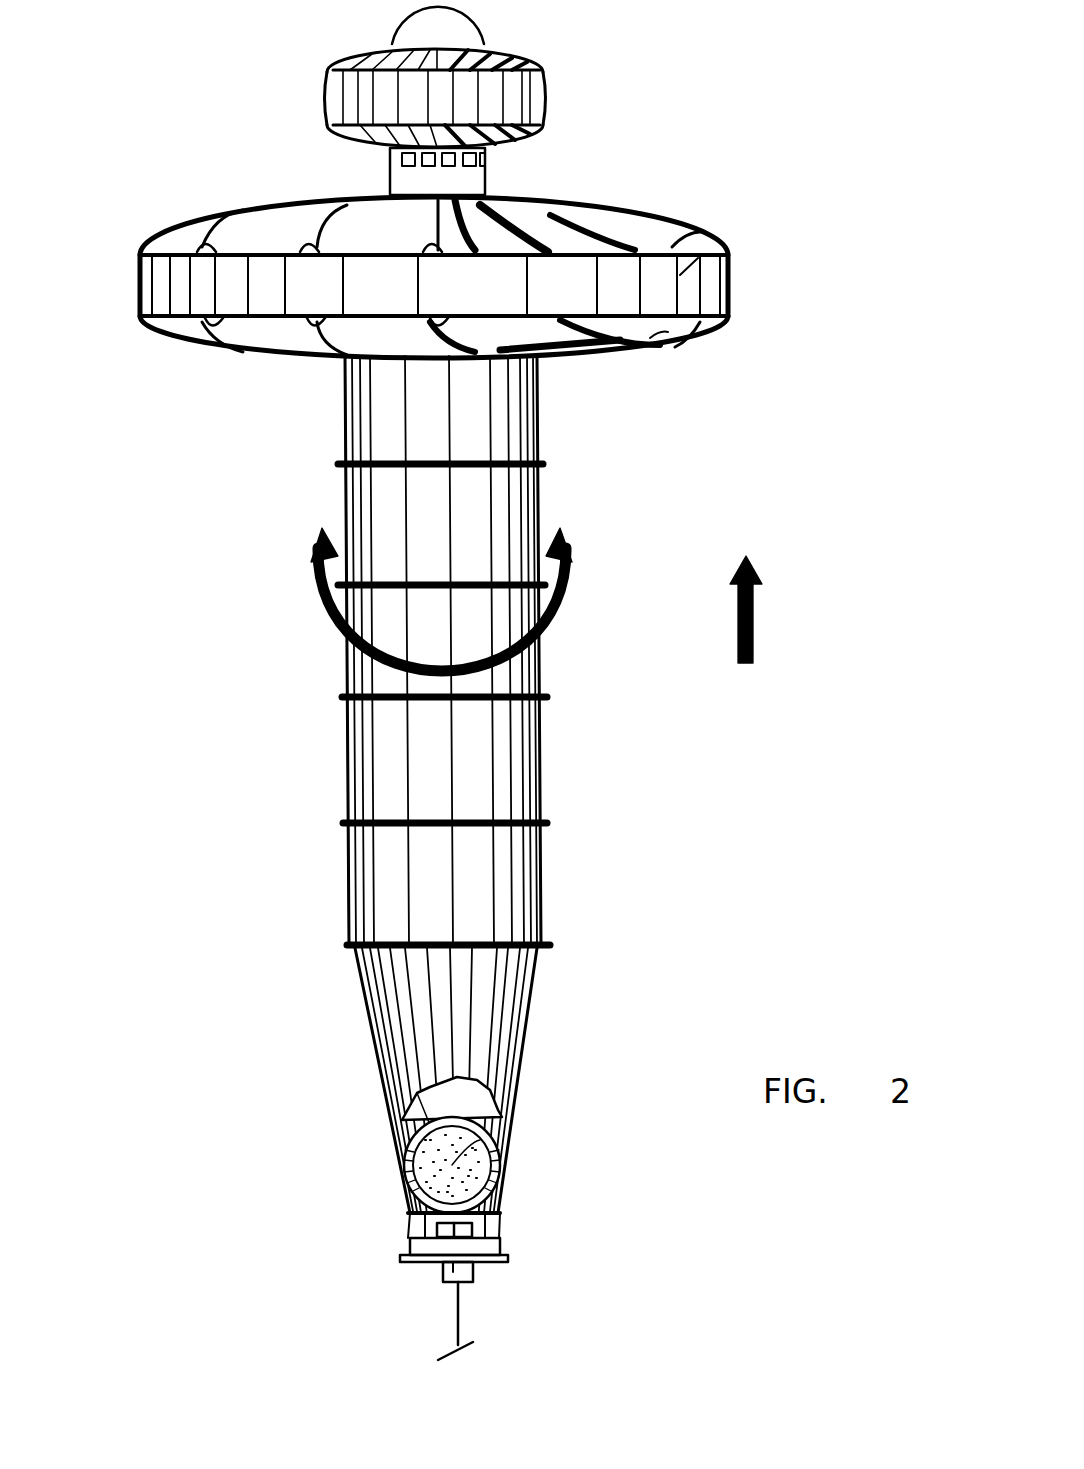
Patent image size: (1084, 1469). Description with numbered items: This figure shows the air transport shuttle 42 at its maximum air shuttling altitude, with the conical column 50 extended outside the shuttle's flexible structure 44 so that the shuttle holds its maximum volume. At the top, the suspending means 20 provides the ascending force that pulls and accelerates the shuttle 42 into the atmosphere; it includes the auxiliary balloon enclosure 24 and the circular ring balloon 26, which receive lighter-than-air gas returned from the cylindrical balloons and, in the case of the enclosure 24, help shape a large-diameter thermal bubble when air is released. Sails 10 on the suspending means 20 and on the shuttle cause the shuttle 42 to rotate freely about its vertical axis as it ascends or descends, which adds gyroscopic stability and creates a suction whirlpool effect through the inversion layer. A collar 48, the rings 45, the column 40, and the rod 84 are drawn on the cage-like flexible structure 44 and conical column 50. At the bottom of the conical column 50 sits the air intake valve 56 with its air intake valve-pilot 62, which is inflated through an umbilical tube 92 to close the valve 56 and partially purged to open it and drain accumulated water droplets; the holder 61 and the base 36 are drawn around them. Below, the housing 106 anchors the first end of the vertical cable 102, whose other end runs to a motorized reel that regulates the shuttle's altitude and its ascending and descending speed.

The sails 10 is at (489, 216).
The auxiliary balloon enclosure 24 is at (547, 97).
The collar 48 is at (400, 182).
The circular ring balloon 26 is at (715, 242).
The suspending means 20 is at (489, 277).
The ring 45 is at (337, 463).
The flexible structure 44 is at (493, 433).
The tubular column 40 is at (440, 650).
The air transport shuttle 42 is at (517, 753).
The conical column 50 is at (517, 1080).
The conical rod 84 is at (528, 1058).
The umbilical tube 92 is at (417, 1115).
The air intake valve-pilot 62 is at (483, 1123).
The air intake valve 56 is at (507, 1165).
The ball holder 61 is at (477, 1148).
The base 36 is at (483, 1245).
The housing 106 is at (455, 1272).
The vertical cable 102 is at (458, 1308).